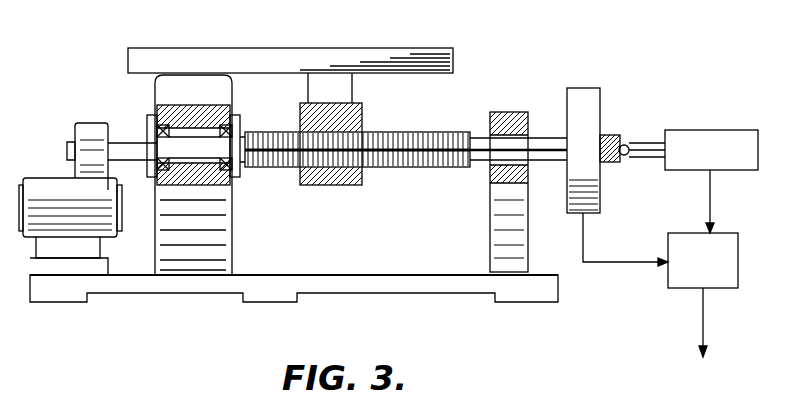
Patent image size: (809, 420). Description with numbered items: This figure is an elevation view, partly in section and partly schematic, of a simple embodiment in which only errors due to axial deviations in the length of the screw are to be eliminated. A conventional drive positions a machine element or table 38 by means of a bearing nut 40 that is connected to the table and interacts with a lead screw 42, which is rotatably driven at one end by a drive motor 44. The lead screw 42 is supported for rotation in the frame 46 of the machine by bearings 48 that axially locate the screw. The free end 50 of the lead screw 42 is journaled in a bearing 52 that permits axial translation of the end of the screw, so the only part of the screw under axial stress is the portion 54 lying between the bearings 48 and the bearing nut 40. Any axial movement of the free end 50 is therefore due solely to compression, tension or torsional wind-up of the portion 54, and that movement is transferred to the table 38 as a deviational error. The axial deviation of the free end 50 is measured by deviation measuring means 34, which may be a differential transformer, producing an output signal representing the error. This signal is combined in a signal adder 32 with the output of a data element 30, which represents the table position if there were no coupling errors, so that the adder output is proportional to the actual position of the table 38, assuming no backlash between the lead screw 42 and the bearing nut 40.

The data element 30 is at (606, 84).
The signal adder 32 is at (710, 233).
The deviation measuring means 34 is at (714, 114).
The table 38 is at (426, 48).
The bearing nut 40 is at (365, 125).
The lead screw 42 is at (422, 167).
The drive motor 44 is at (75, 178).
The frame 46 is at (232, 242).
The bearings 48 is at (162, 110).
The free end 50 is at (548, 138).
The bearing 52 is at (490, 136).
The portion 54 is at (300, 126).